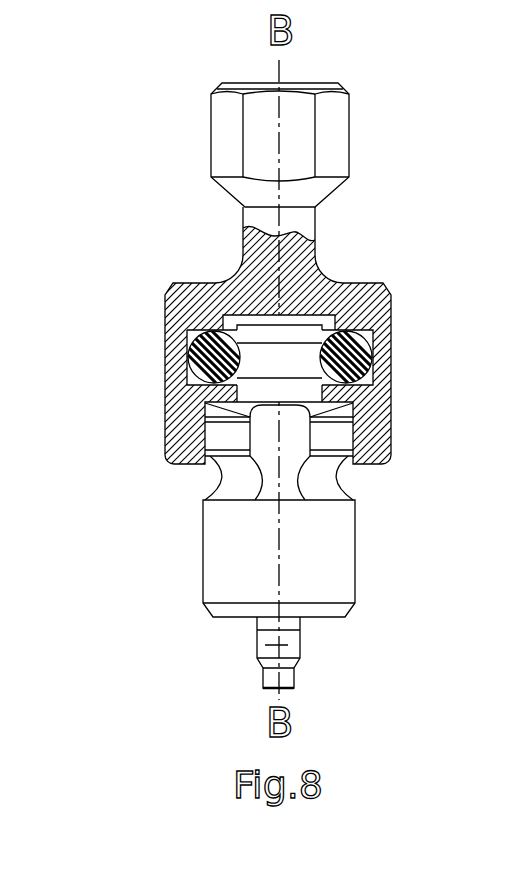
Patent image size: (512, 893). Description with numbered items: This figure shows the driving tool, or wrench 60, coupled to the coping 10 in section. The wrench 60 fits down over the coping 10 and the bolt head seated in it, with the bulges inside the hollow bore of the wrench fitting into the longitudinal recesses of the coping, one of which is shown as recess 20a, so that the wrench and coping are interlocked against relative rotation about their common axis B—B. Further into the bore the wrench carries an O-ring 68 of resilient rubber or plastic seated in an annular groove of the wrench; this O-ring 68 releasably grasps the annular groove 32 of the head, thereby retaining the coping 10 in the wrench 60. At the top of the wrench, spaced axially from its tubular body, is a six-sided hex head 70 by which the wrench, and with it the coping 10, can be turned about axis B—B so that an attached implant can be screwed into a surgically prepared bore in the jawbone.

The hex head 70 is at (303, 84).
The wrench 60 is at (142, 386).
The annular groove 32 is at (293, 362).
The O-ring 68 is at (376, 359).
The longitudinal recess 20a is at (287, 462).
The coping 10 is at (173, 552).